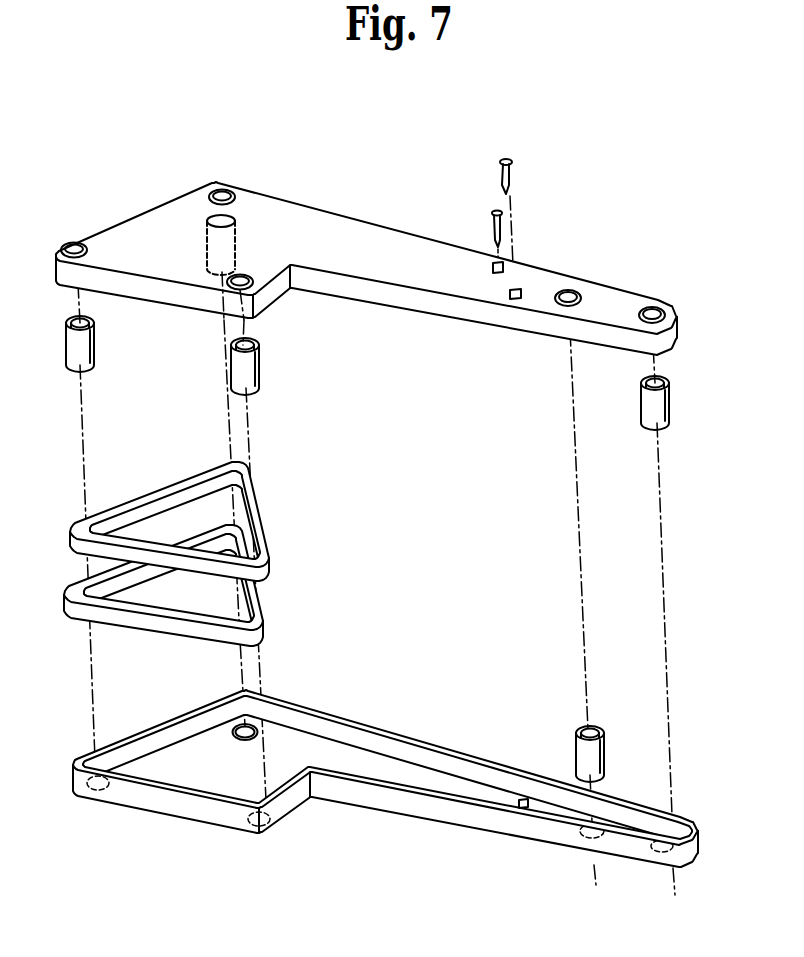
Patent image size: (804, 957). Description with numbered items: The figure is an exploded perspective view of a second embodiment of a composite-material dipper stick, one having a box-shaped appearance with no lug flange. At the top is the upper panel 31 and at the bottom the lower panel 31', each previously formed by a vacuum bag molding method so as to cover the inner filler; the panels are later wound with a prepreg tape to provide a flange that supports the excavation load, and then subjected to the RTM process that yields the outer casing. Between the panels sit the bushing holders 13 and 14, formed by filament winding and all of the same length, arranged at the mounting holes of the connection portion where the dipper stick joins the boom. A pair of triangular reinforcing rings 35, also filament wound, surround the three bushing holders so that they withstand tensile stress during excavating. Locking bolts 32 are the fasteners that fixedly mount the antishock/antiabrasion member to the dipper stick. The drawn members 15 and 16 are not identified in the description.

The upper panel 31 is at (366, 231).
The lower panel 31' is at (385, 763).
The locking bolts 32 is at (512, 170).
The bushing holder 14 is at (237, 247).
The bushing holder 13 is at (65, 349).
The spacer tube 15 is at (673, 402).
The spacer tube 16 is at (570, 743).
The triangular reinforcing ring 35 is at (268, 603).